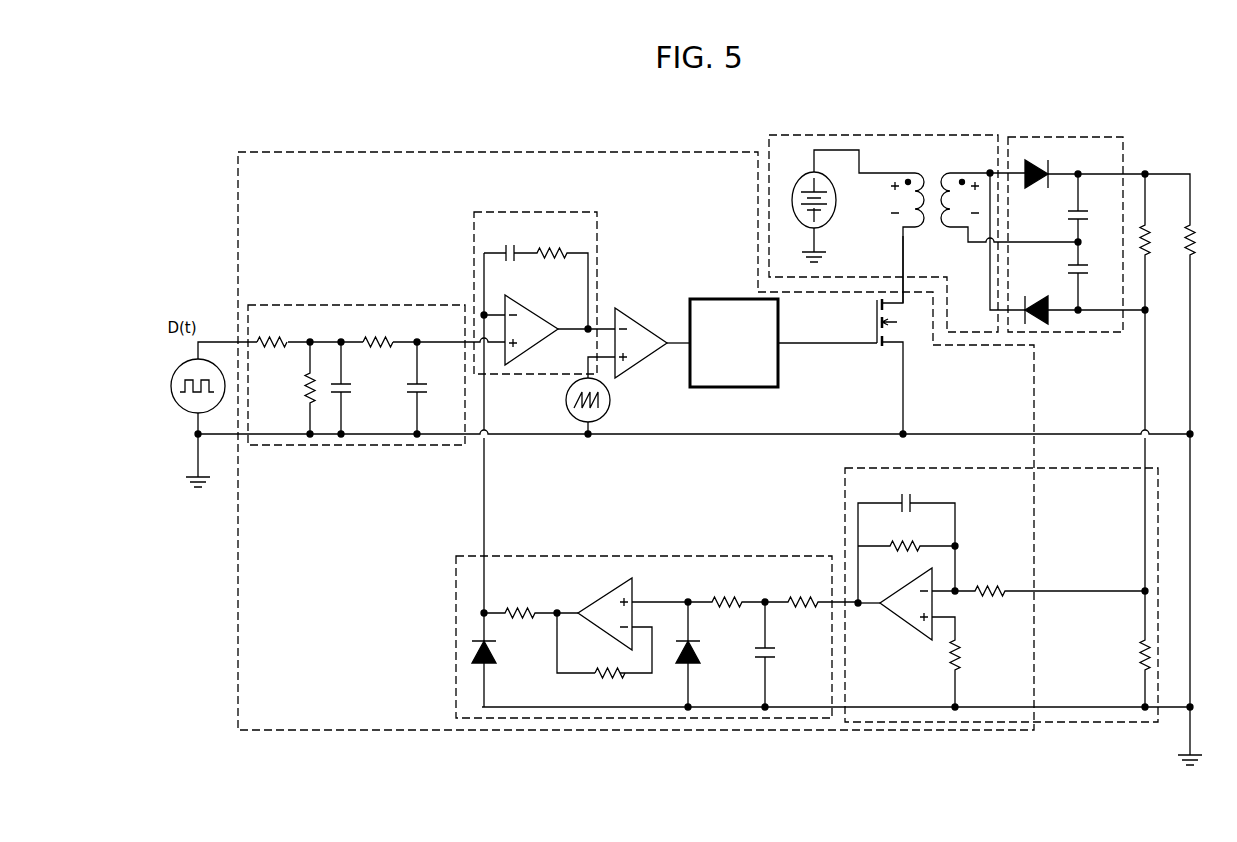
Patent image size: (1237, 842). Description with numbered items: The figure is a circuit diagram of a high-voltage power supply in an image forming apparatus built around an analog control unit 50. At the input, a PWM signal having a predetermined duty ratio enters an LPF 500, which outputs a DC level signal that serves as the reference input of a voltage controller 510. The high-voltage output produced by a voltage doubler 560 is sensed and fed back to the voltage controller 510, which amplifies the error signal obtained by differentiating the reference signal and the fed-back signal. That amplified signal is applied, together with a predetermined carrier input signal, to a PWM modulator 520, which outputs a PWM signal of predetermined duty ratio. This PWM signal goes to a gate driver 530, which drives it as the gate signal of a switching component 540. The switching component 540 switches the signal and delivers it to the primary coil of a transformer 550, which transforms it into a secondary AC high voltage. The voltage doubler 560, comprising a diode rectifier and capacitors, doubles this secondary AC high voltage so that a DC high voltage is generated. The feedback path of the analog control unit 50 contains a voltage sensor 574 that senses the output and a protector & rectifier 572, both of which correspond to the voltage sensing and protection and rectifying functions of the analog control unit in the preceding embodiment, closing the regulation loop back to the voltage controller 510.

The analog control unit 50 is at (603, 152).
The LPF 500 is at (311, 305).
The voltage controller 510 is at (529, 212).
The PWM modulator 520 is at (633, 315).
The gate driver 530 is at (731, 299).
The switching component 540 is at (887, 346).
The transformer 550 is at (873, 135).
The voltage doubler 560 is at (1058, 137).
The protector & rectifier 572 is at (638, 556).
The voltage sensor 574 is at (845, 491).